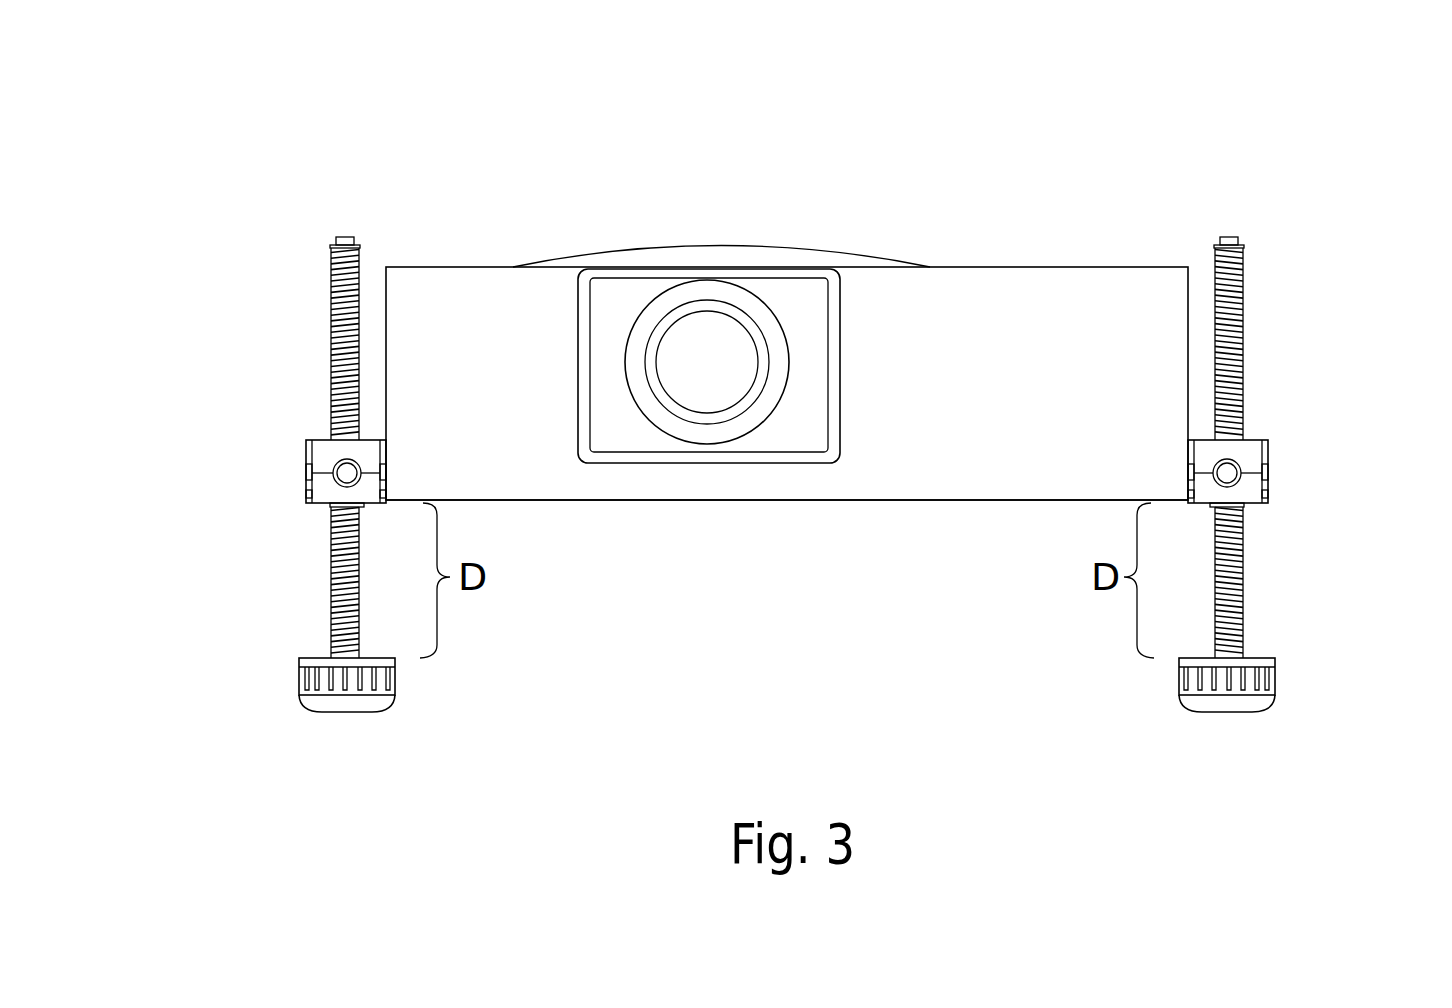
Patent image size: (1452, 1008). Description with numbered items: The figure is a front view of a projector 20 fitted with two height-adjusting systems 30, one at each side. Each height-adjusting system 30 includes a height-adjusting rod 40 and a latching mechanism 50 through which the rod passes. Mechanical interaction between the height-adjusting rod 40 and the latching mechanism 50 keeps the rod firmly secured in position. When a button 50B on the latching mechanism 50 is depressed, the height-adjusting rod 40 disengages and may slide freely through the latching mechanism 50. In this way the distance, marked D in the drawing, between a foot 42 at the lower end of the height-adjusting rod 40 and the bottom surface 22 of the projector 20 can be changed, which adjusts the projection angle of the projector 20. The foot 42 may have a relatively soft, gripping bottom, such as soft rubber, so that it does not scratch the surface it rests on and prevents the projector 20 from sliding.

The projector 20 is at (1048, 217).
The bottom surface 22 is at (688, 533).
The height-adjusting system 30 is at (313, 583).
The height-adjusting rod 40 is at (340, 390).
The foot 42 is at (299, 685).
The latching mechanism 50 is at (280, 427).
The button 50B is at (343, 475).